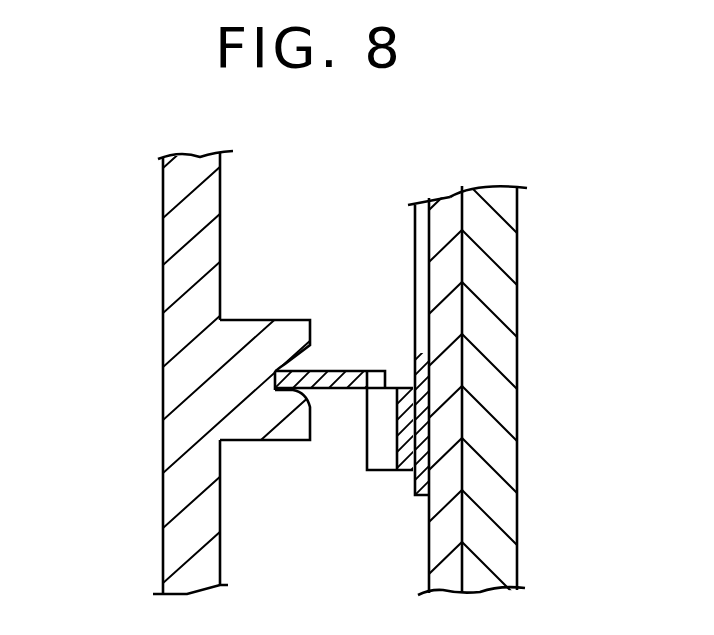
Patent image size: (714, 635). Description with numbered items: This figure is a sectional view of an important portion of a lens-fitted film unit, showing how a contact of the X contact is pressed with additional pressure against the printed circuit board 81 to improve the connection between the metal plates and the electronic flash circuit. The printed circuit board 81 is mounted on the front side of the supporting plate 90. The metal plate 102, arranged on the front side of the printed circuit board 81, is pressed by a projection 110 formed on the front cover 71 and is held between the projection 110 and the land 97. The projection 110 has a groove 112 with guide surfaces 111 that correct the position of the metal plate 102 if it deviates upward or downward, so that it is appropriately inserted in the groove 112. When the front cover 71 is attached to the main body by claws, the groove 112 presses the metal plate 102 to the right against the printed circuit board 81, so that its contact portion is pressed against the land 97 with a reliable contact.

The front cover 71 is at (172, 390).
The projection 110 is at (260, 305).
The guide surfaces 111 is at (313, 407).
The groove 112 is at (303, 368).
The metal plate 102 is at (354, 370).
The land 97 is at (415, 481).
The printed circuit board 81 is at (443, 203).
The supporting plate 90 is at (490, 188).